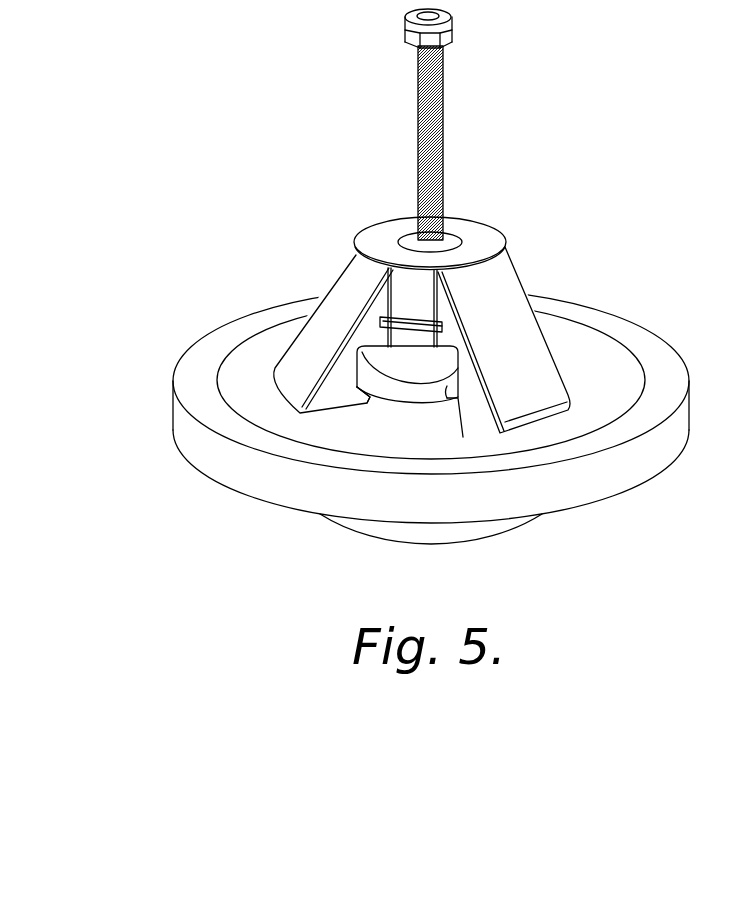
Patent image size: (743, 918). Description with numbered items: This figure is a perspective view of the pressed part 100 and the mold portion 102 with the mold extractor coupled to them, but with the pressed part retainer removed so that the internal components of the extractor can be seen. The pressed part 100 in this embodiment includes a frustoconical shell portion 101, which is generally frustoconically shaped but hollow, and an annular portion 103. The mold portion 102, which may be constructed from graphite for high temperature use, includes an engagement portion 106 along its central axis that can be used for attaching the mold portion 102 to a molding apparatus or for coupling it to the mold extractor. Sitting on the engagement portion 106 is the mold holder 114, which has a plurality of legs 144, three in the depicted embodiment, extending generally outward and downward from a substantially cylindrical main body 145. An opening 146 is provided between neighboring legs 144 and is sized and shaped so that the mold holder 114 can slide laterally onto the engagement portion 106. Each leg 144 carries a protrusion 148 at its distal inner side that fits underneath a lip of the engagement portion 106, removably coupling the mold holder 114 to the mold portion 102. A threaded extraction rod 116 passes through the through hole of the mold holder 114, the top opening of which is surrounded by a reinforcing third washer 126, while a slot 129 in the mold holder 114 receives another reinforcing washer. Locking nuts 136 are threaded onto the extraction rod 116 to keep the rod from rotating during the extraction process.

The pressed part 100 is at (205, 452).
The frustoconical shell portion 101 is at (388, 530).
The mold portion 102 is at (243, 400).
The annular portion 103 is at (658, 448).
The engagement portion 106 is at (427, 367).
The mold holder 114 is at (484, 241).
The extraction rod 116 is at (416, 90).
The third washer 126 is at (400, 236).
The slot 129 is at (393, 318).
The locking nuts 136 is at (452, 15).
The legs 144 is at (347, 277).
The main body 145 is at (408, 292).
The opening 146 is at (437, 387).
The protrusions 148 is at (378, 380).